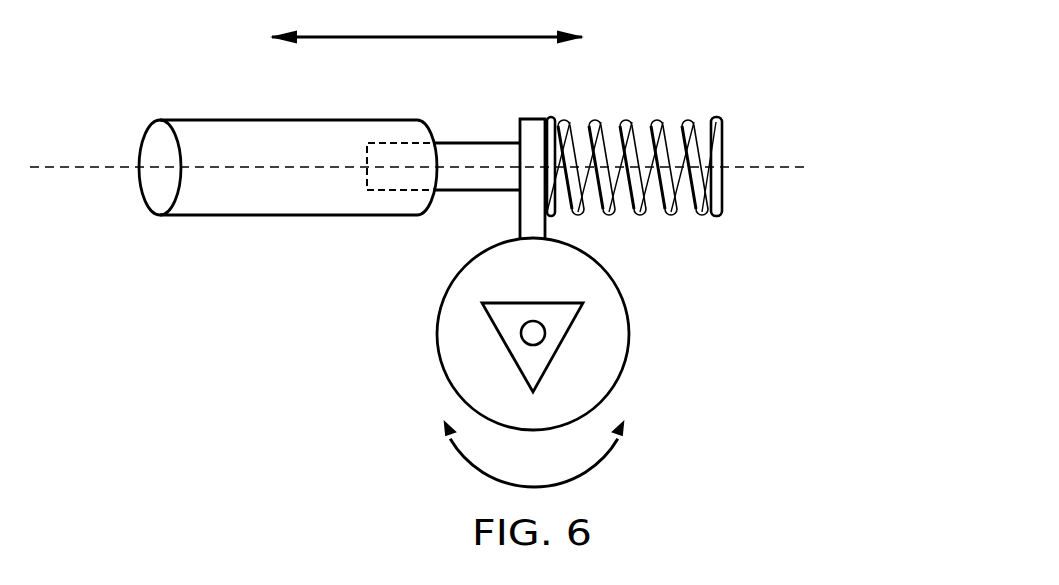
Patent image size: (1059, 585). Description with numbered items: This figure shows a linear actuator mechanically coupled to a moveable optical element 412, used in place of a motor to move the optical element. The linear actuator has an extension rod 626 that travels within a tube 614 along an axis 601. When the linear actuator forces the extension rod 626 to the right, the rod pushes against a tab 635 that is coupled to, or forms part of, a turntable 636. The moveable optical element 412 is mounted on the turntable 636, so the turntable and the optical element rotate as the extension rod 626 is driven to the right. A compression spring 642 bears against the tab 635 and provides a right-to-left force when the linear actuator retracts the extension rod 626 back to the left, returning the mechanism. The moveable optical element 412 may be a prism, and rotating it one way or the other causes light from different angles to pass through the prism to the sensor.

The axis 601 is at (82, 167).
The tube 614 is at (190, 119).
The extension rod 626 is at (475, 143).
The tab 635 is at (533, 119).
The compression spring 642 is at (625, 117).
The turntable 636 is at (630, 334).
The moveable optical element 412 is at (507, 348).